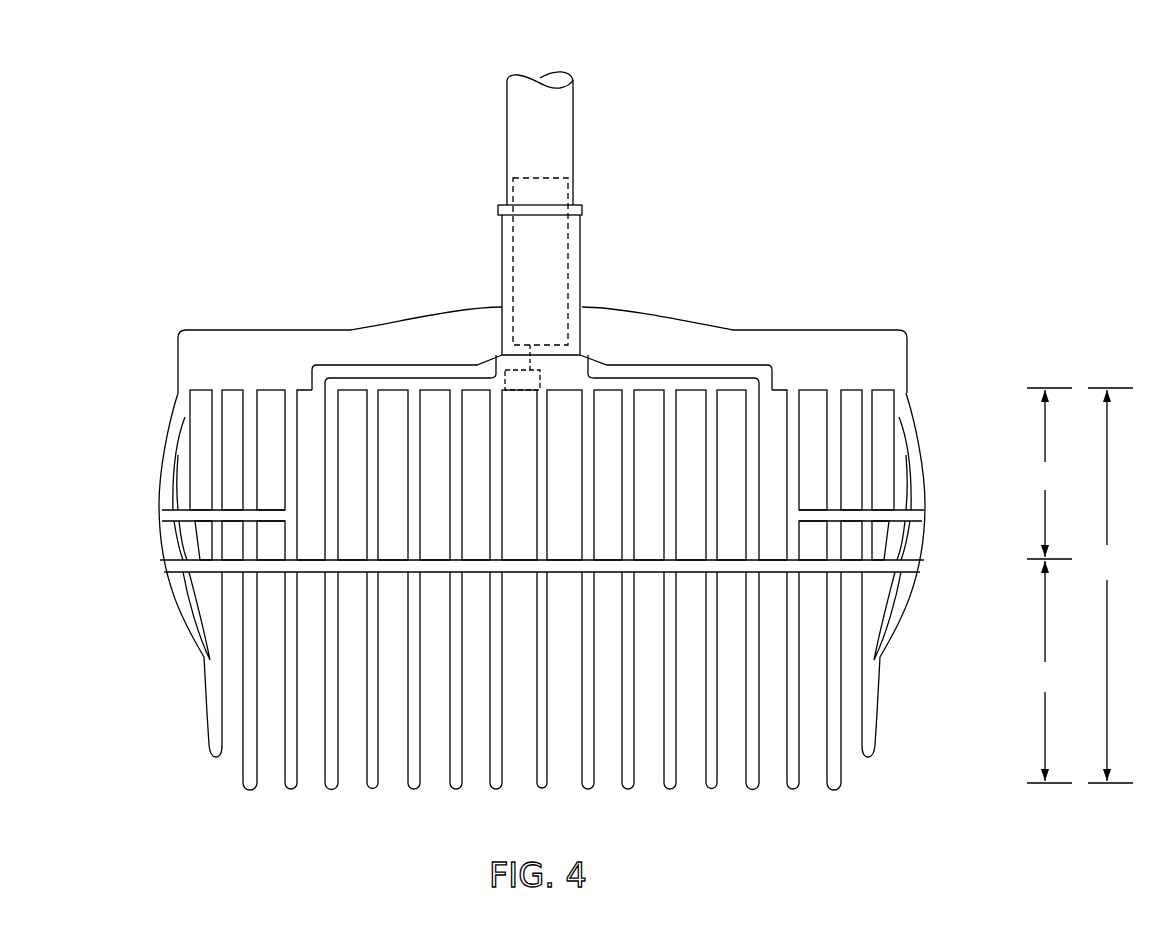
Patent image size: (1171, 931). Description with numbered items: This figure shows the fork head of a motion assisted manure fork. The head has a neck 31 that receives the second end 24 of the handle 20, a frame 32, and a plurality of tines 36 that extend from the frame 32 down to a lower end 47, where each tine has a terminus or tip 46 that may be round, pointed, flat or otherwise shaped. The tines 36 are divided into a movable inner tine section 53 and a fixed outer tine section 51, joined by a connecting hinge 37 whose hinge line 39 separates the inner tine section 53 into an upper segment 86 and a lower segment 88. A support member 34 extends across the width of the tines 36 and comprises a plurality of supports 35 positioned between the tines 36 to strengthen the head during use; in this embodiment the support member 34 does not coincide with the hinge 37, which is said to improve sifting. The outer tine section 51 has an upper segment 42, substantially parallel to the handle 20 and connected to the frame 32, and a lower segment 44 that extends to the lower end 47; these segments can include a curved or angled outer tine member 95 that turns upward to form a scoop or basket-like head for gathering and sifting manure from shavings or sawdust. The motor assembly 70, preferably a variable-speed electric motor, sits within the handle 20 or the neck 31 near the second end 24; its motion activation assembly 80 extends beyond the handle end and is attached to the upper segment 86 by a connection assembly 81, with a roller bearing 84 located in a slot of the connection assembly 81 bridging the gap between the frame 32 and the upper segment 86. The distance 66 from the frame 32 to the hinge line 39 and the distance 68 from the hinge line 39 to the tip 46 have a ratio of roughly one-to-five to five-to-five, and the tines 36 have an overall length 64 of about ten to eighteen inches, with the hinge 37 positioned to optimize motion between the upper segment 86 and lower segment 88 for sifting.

The handle 20 is at (562, 137).
The second end of the handle 24 is at (507, 139).
The neck 31 is at (575, 280).
The frame 32 is at (848, 362).
The support member 34 is at (882, 510).
The supports 35 is at (856, 578).
The tines 36 is at (646, 808).
The hinge 37 is at (777, 567).
The hinge line 39 is at (695, 563).
The upper segment of the outer tine section 42 is at (928, 414).
The lower segment of the outer tine section 44 is at (863, 550).
The tip 46 is at (752, 790).
The lower end 47 is at (884, 778).
The outer tine section 51 is at (921, 389).
The inner tine section 53 is at (712, 384).
The overall length 64 is at (1108, 585).
The distance of the upper segment 66 is at (1045, 473).
The distance of the lower segment 68 is at (1045, 671).
The motor assembly 70 is at (560, 188).
The motion activation assembly 80 is at (543, 357).
The connection assembly 81 is at (485, 362).
The roller bearing 84 is at (533, 380).
The upper segment of the inner tine section 86 is at (527, 447).
The lower segment of the inner tine section 88 is at (532, 688).
The outer tine member 95 is at (931, 486).